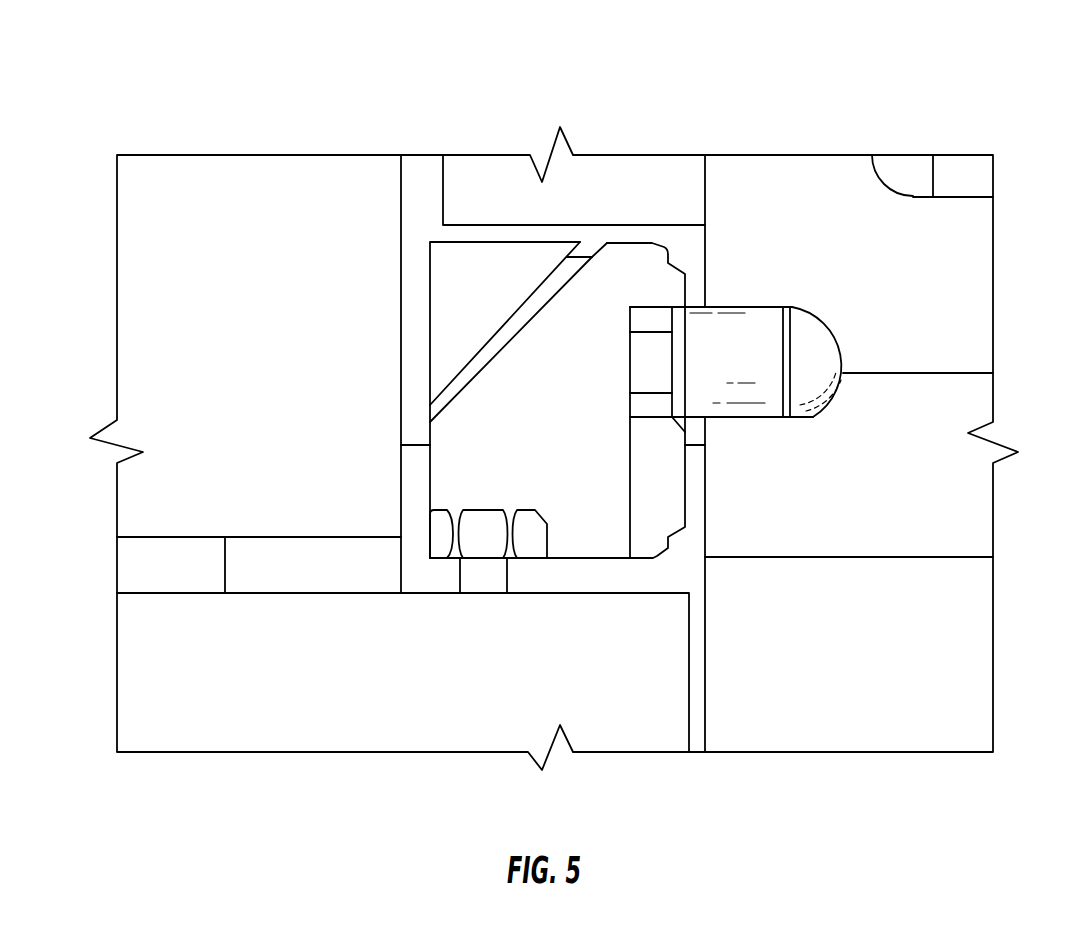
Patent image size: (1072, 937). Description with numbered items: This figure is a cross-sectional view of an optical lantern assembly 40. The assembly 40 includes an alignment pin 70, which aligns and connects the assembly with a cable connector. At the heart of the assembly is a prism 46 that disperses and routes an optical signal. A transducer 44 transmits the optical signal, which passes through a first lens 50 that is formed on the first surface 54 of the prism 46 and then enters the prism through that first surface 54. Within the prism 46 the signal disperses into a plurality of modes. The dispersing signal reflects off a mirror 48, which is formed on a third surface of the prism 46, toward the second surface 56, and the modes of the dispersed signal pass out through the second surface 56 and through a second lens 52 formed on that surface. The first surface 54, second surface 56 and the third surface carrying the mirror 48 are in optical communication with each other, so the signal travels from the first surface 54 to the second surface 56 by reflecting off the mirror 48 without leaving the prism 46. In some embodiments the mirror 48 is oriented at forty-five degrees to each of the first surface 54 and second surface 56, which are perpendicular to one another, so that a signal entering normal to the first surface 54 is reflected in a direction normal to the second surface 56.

The optical lantern assembly 40 is at (626, 226).
The transducer 44 is at (478, 600).
The prism 46 is at (478, 436).
The mirror 48 is at (505, 340).
The first lens 50 is at (502, 538).
The first surface 54 is at (433, 508).
The second surface 56 is at (631, 357).
The second lens 52 is at (649, 368).
The alignment pin 70 is at (805, 367).